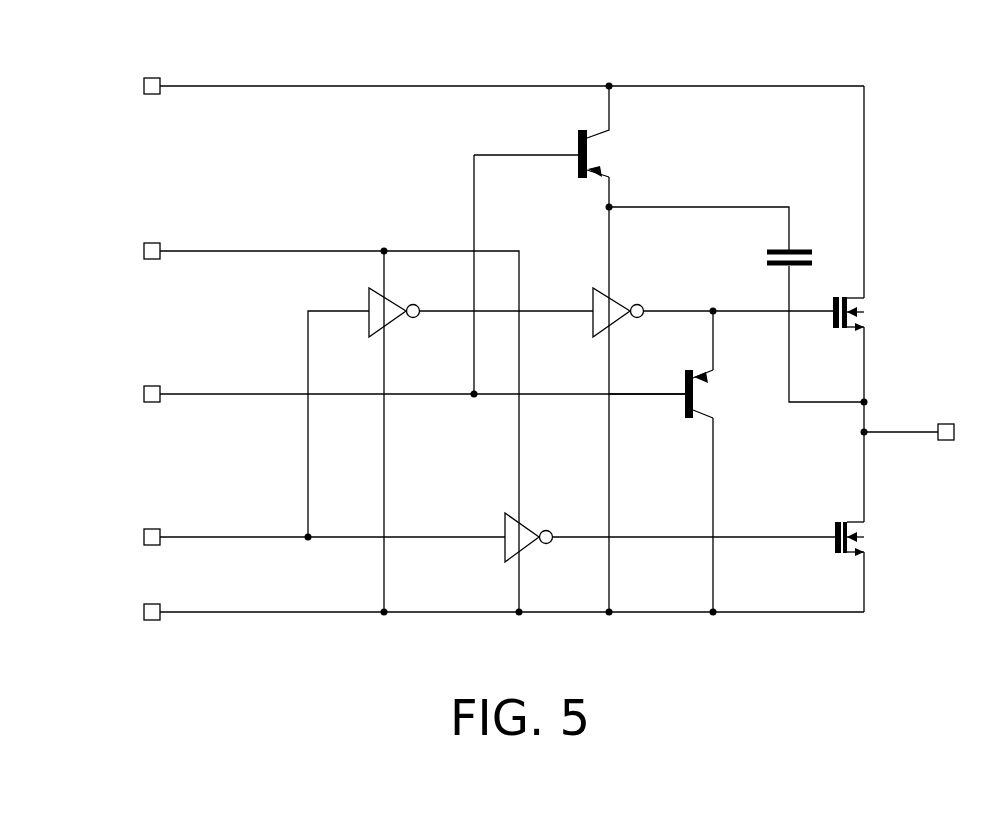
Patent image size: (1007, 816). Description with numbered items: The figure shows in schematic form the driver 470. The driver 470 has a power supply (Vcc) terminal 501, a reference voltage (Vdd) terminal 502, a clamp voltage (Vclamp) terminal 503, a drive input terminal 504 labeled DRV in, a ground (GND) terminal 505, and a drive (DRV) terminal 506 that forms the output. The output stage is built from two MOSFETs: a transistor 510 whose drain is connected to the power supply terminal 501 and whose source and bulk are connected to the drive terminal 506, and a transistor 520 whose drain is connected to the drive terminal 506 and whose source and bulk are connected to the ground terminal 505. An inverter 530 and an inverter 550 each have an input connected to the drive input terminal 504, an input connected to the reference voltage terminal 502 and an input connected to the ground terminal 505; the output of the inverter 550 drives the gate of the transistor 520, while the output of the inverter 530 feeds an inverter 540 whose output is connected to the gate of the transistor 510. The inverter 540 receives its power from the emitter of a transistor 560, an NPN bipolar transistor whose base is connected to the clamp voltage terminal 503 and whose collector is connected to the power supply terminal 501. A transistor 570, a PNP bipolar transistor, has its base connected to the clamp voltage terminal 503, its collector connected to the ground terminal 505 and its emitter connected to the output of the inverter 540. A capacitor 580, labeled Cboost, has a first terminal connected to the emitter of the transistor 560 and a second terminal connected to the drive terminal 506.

The driver 470 is at (321, 717).
The power supply (Vcc) terminal 501 is at (150, 78).
The reference voltage (Vdd) terminal 502 is at (150, 243).
The clamp voltage (Vclamp) terminal 503 is at (150, 386).
The drive input terminal 504 is at (150, 529).
The ground (GND) terminal 505 is at (150, 604).
The drive (DRV) terminal 506 is at (946, 424).
The transistor 510 is at (840, 333).
The transistor 520 is at (840, 521).
The inverter 530 is at (399, 318).
The inverter 540 is at (622, 303).
The inverter 550 is at (527, 529).
The transistor 560 is at (583, 180).
The transistor 570 is at (687, 420).
The capacitor 580 is at (808, 249).